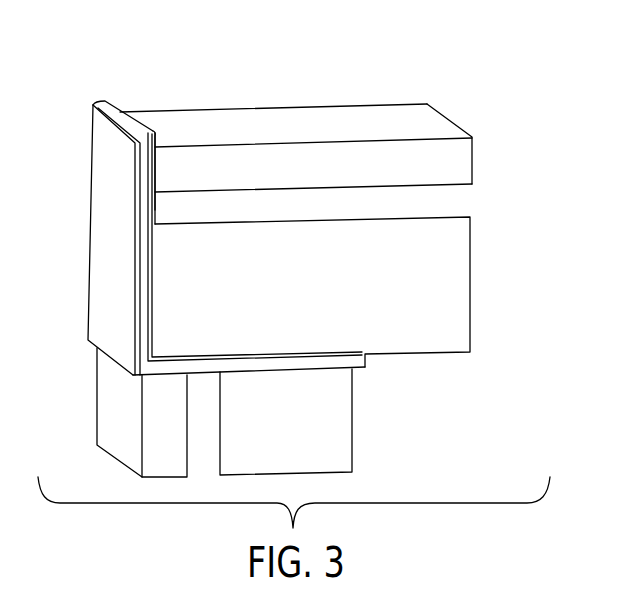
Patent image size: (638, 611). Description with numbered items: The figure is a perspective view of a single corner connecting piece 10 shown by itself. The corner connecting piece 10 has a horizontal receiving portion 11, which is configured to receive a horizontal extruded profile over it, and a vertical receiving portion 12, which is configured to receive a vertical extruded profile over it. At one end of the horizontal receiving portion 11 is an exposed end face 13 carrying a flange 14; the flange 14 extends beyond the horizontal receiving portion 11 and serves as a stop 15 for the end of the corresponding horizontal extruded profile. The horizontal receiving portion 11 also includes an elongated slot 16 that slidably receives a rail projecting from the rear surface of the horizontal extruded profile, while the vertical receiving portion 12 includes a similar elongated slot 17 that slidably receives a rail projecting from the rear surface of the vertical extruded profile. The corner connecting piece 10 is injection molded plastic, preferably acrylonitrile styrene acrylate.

The corner connecting piece 10 is at (225, 125).
The horizontal receiving portion 11 is at (447, 255).
The vertical receiving portion 12 is at (335, 420).
The exposed end face 13 is at (109, 250).
The flange 14 is at (94, 104).
The stop 15 is at (155, 208).
The elongated slot 16 is at (410, 183).
The elongated slot 17 is at (213, 440).